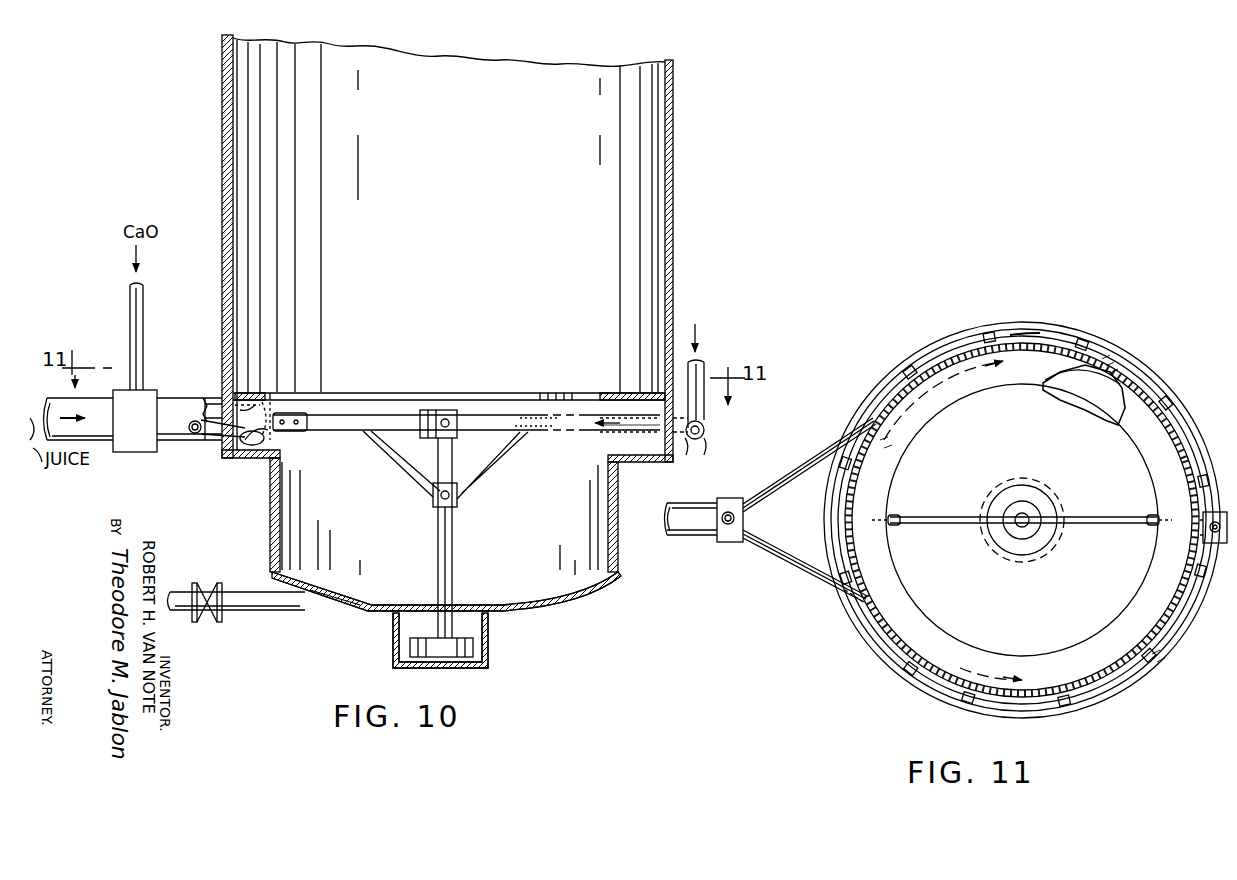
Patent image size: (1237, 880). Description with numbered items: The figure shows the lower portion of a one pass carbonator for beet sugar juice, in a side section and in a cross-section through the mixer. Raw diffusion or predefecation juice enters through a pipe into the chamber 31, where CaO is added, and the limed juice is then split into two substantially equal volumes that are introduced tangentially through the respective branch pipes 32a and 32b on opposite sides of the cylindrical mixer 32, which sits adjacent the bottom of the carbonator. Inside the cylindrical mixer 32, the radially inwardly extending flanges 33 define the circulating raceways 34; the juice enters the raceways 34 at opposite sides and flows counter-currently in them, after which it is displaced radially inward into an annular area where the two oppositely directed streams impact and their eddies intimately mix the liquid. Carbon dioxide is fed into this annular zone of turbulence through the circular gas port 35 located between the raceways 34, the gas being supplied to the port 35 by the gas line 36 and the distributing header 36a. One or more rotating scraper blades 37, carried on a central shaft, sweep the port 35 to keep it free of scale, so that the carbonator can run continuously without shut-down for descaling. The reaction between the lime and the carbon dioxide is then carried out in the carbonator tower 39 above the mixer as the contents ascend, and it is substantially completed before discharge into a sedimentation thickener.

In FIG. 10, the chamber 31 is at (143, 445).
In FIG. 11, the chamber 31 is at (727, 542).
In FIG. 10, the cylindrical mixer 32 is at (232, 470).
In FIG. 11, the branch pipe 32a is at (812, 468).
In FIG. 11, the branch pipe 32b is at (778, 564).
In FIG. 10, the radially inwardly extending flange 33 is at (282, 398).
In FIG. 11, the radially inwardly extending flange 33 is at (1050, 380).
In FIG. 10, the circulating raceway 34 is at (276, 440).
In FIG. 10, the circular gas port 35 is at (632, 438).
In FIG. 10, the gas line 36 is at (702, 376).
In FIG. 11, the gas line 36 is at (1205, 532).
In FIG. 10, the distributing header 36a is at (704, 445).
In FIG. 11, the distributing header 36a is at (1030, 325).
In FIG. 10, the rotating scraper blade 37 is at (300, 418).
In FIG. 11, the rotating scraper blade 37 is at (893, 515).
In FIG. 10, the carbonator tower 39 is at (670, 242).